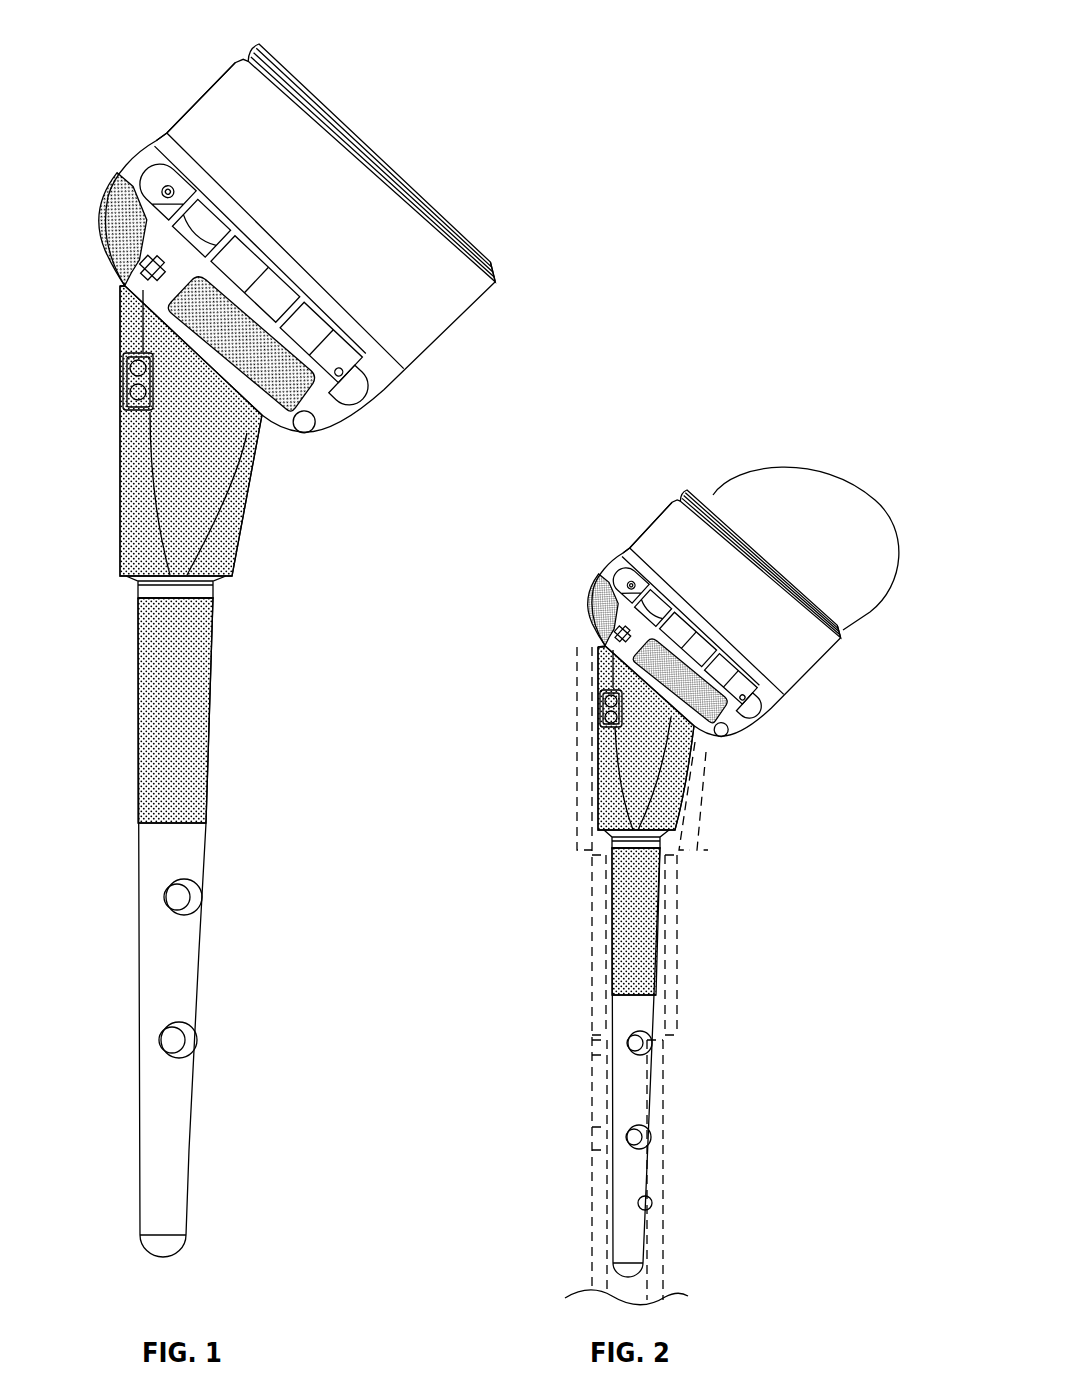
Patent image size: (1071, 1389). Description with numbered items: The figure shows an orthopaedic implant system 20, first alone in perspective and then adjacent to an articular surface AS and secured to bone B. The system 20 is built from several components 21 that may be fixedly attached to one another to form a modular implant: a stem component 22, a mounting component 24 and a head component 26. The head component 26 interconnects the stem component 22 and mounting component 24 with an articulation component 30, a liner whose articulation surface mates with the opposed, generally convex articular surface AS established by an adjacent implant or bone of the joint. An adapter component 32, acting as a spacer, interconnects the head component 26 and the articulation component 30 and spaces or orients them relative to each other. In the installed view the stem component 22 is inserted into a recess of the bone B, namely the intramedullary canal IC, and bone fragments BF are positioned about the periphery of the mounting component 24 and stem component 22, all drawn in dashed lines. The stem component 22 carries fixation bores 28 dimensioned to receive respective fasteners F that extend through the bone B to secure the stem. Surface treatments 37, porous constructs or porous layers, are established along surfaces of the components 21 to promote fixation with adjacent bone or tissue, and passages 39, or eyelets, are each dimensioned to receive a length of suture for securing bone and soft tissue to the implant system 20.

In FIG. 1, the orthopaedic implant system 20 is at (97, 35).
In FIG. 2, the orthopaedic implant system 20 is at (583, 522).
In FIG. 1, the components 21 is at (182, 112).
In FIG. 2, the components 21 is at (724, 667).
In FIG. 1, the stem component 22 is at (120, 710).
In FIG. 2, the stem component 22 is at (597, 1022).
In FIG. 1, the mounting component 24 is at (103, 320).
In FIG. 2, the mounting component 24 is at (581, 752).
In FIG. 1, the head component 26 is at (103, 170).
In FIG. 2, the head component 26 is at (588, 566).
In FIG. 1, the fixation bores 28 is at (190, 898).
In FIG. 2, the fixation bores 28 is at (645, 1044).
In FIG. 1, the articulation component 30 is at (253, 22).
In FIG. 2, the articulation component 30 is at (686, 472).
In FIG. 1, the adapter component 32 is at (210, 66).
In FIG. 2, the adapter component 32 is at (648, 506).
In FIG. 1, the surface treatments 37 is at (120, 210).
In FIG. 2, the surface treatments 37 is at (597, 603).
In FIG. 1, the passages 39 is at (166, 196).
In FIG. 2, the passages 39 is at (676, 660).
In FIG. 2, the articular surface AS is at (872, 593).
In FIG. 2, the bone fragments BF is at (578, 866).
In FIG. 2, the bone B is at (680, 996).
In FIG. 2, the fasteners F is at (598, 1056).
In FIG. 2, the intramedullary canal IC is at (648, 1198).